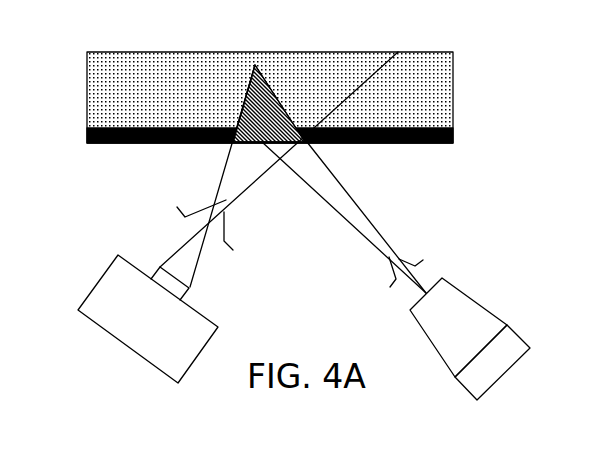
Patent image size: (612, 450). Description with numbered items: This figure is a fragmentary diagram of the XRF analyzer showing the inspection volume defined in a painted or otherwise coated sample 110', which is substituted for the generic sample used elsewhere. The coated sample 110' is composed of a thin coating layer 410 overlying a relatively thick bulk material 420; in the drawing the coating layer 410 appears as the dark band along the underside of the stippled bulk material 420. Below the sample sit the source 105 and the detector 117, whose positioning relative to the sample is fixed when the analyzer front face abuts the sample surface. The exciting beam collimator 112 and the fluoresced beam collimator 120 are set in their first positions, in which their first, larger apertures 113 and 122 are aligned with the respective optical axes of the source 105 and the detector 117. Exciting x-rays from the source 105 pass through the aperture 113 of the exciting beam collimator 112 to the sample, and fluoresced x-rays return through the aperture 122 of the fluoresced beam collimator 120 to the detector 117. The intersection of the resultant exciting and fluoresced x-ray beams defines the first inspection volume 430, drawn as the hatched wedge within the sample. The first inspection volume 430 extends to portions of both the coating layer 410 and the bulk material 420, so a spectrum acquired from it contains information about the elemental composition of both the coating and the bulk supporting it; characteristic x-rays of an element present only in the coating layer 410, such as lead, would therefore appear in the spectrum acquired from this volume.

The coated sample 110' is at (282, 126).
The bulk material 420 is at (388, 102).
The coating layer 410 is at (372, 145).
The first inspection volume 430 is at (258, 70).
The source 105 is at (503, 373).
The detector 117 is at (130, 350).
The exciting beam collimator 112 is at (393, 289).
The first aperture of exciting beam collimator 113 is at (393, 262).
The fluoresced beam collimator 120 is at (229, 253).
The first aperture of fluoresced beam collimator 122 is at (218, 204).